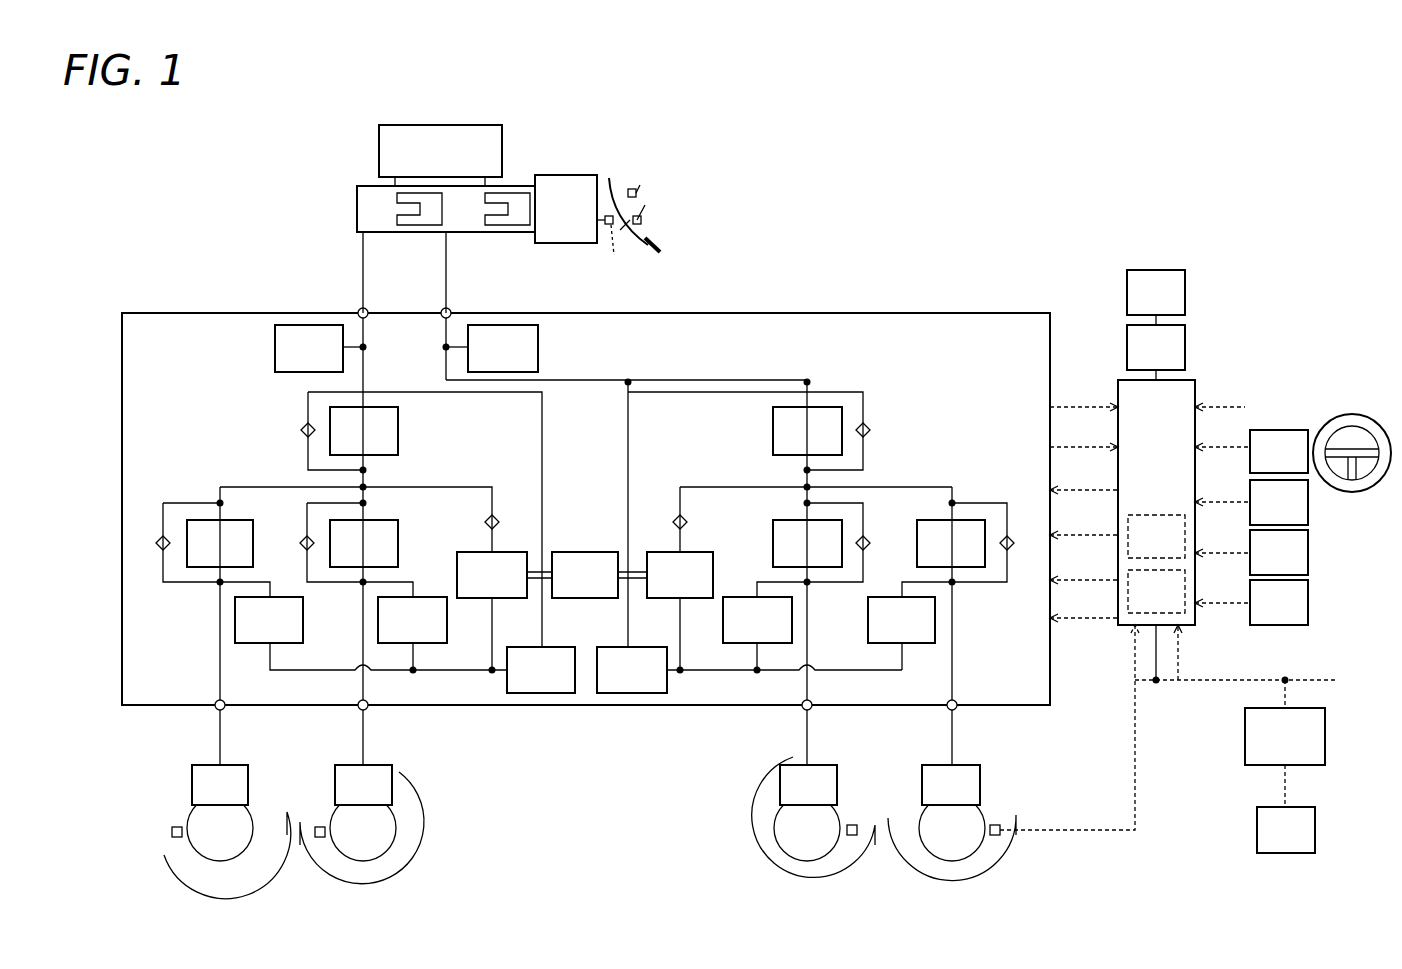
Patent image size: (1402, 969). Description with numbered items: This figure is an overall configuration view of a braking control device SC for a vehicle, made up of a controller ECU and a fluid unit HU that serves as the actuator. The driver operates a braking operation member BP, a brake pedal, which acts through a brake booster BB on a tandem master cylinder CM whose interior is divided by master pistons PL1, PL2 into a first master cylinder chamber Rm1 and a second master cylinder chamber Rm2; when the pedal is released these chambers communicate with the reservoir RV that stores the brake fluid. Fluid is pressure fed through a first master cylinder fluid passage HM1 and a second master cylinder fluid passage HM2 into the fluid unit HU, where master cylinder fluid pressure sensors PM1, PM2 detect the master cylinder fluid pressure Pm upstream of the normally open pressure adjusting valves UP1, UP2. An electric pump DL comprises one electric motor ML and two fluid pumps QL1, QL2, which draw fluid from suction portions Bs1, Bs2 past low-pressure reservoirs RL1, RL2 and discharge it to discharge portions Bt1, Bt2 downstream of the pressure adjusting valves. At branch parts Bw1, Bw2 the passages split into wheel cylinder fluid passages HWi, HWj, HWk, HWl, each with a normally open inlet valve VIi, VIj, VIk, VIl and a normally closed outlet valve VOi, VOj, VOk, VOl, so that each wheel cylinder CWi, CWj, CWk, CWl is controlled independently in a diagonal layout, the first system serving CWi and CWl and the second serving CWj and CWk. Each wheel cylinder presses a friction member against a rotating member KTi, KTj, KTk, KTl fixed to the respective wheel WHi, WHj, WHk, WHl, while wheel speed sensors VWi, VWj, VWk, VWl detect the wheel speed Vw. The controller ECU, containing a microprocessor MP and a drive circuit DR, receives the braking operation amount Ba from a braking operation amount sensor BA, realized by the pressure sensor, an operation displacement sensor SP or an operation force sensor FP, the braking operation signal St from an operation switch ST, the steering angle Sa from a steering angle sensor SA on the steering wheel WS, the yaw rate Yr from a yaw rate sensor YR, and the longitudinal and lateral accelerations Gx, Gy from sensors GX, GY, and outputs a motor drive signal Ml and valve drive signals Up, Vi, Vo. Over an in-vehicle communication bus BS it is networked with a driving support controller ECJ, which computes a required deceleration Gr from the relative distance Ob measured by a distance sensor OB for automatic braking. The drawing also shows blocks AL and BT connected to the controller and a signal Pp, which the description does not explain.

The fluid unit HU is at (178, 313).
The reservoir RV is at (440, 155).
The master cylinder CM is at (370, 190).
The second master cylinder chamber Rm2 is at (365, 228).
The master piston PL2 is at (430, 232).
The first master cylinder chamber Rm1 is at (462, 232).
The master piston PL1 is at (525, 232).
The brake booster BB is at (570, 209).
The braking operation member BP is at (654, 223).
The operation displacement sensor SP is at (677, 191).
The braking operation amount sensor BA is at (677, 191).
The operation switch ST is at (651, 210).
The operation force sensor FP is at (644, 259).
The braking control device SC is at (832, 270).
The master cylinder fluid pressure sensor PM2 is at (319, 348).
The master cylinder fluid pressure sensor PM1 is at (492, 348).
The second master cylinder fluid passage HM2 is at (363, 335).
The first master cylinder fluid passage HM1 is at (712, 380).
The suction portion Bs1 is at (630, 380).
The suction portion Bs2 is at (365, 393).
The pressure adjusting valve UP2 is at (364, 431).
The pressure adjusting valve UP1 is at (807, 431).
The discharge portion Bt2 is at (441, 479).
The branch part Bw2 is at (365, 487).
The discharge portion Bt1 is at (735, 476).
The branch part Bw1 is at (805, 487).
The electric pump DL is at (589, 517).
The inlet valve VIj is at (220, 543).
The inlet valve VIk is at (364, 543).
The inlet valve VIl is at (807, 543).
The inlet valve VIi is at (951, 543).
The fluid pump QL2 is at (492, 575).
The electric motor ML is at (585, 575).
The fluid pump QL1 is at (680, 575).
The outlet valve VOj is at (269, 620).
The outlet valve VOk is at (412, 620).
The outlet valve VOl is at (757, 620).
The outlet valve VOi is at (901, 620).
The low-pressure reservoir RL2 is at (541, 670).
The low-pressure reservoir RL1 is at (632, 670).
The rotating member KTj is at (220, 828).
The rotating member KTk is at (363, 828).
The rotating member KTl is at (807, 828).
The rotating member KTi is at (952, 828).
The wheel cylinder CWj is at (220, 785).
The wheel cylinder CWk is at (363, 785).
The wheel cylinder CWl is at (808, 785).
The wheel cylinder CWi is at (951, 785).
The wheel cylinder fluid passage HWj is at (222, 718).
The wheel cylinder fluid passage HWk is at (365, 718).
The wheel cylinder fluid passage HWl is at (809, 718).
The wheel cylinder fluid passage HWi is at (954, 718).
The wheel WHj is at (165, 855).
The wheel WHk is at (410, 850).
The wheel WHl is at (752, 855).
The wheel WHi is at (1008, 852).
The wheel speed sensor VWj is at (177, 826).
The wheel speed sensor VWk is at (320, 826).
The wheel speed sensor VWl is at (853, 824).
The wheel speed sensor VWi is at (997, 824).
The wheel speed Vw is at (1090, 727).
The alternator AL is at (1156, 297).
The battery BT is at (1156, 352).
The controller ECU is at (1156, 502).
The microprocessor MP is at (1156, 536).
The drive circuit DR is at (1156, 591).
The master cylinder fluid pressure Pm is at (1084, 404).
The pressure signal Pp is at (1084, 440).
The drive signal Ml is at (1084, 482).
The drive signal Up is at (1084, 527).
The drive signal Vi is at (1084, 570).
The drive signal Vo is at (1084, 608).
The braking operation amount Ba is at (1254, 407).
The braking operation signal St is at (1254, 407).
The steering angle Sa is at (1222, 438).
The yaw rate Yr is at (1222, 490).
The longitudinal acceleration Gx is at (1222, 541).
The lateral acceleration Gy is at (1222, 591).
The steering angle sensor SA is at (1279, 451).
The yaw rate sensor YR is at (1279, 502).
The longitudinal acceleration sensor GX is at (1279, 552).
The lateral acceleration sensor GY is at (1279, 602).
The steering operation member WS is at (1335, 434).
The required deceleration Gr is at (1191, 652).
The in-vehicle communication bus BS is at (1236, 654).
The driving support controller ECJ is at (1285, 722).
The relative distance Ob is at (1305, 786).
The distance sensor OB is at (1286, 830).